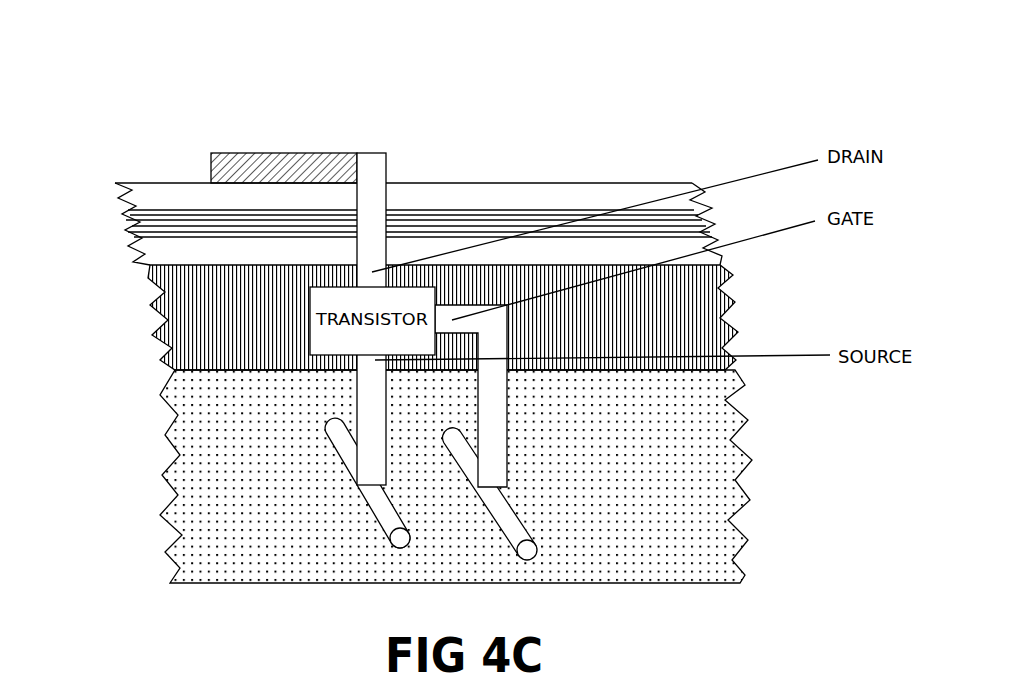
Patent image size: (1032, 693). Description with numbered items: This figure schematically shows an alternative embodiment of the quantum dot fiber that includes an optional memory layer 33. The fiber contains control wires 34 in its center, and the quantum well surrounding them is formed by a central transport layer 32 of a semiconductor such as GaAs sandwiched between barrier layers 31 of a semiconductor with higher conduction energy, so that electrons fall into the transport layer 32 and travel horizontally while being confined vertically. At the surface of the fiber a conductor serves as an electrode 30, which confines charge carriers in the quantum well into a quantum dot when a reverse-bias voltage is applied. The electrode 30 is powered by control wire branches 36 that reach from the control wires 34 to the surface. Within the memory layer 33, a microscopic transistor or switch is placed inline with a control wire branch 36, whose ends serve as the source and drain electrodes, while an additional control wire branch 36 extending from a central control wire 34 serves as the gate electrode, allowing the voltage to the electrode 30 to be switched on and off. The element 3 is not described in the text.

The substrate 3 is at (230, 468).
The electrode 30 is at (300, 160).
The barrier layer 31 is at (173, 252).
The transport layer 32 is at (187, 225).
The memory layer 33 is at (183, 285).
The control wire 34 is at (390, 522).
The control wire branch 36 is at (493, 398).